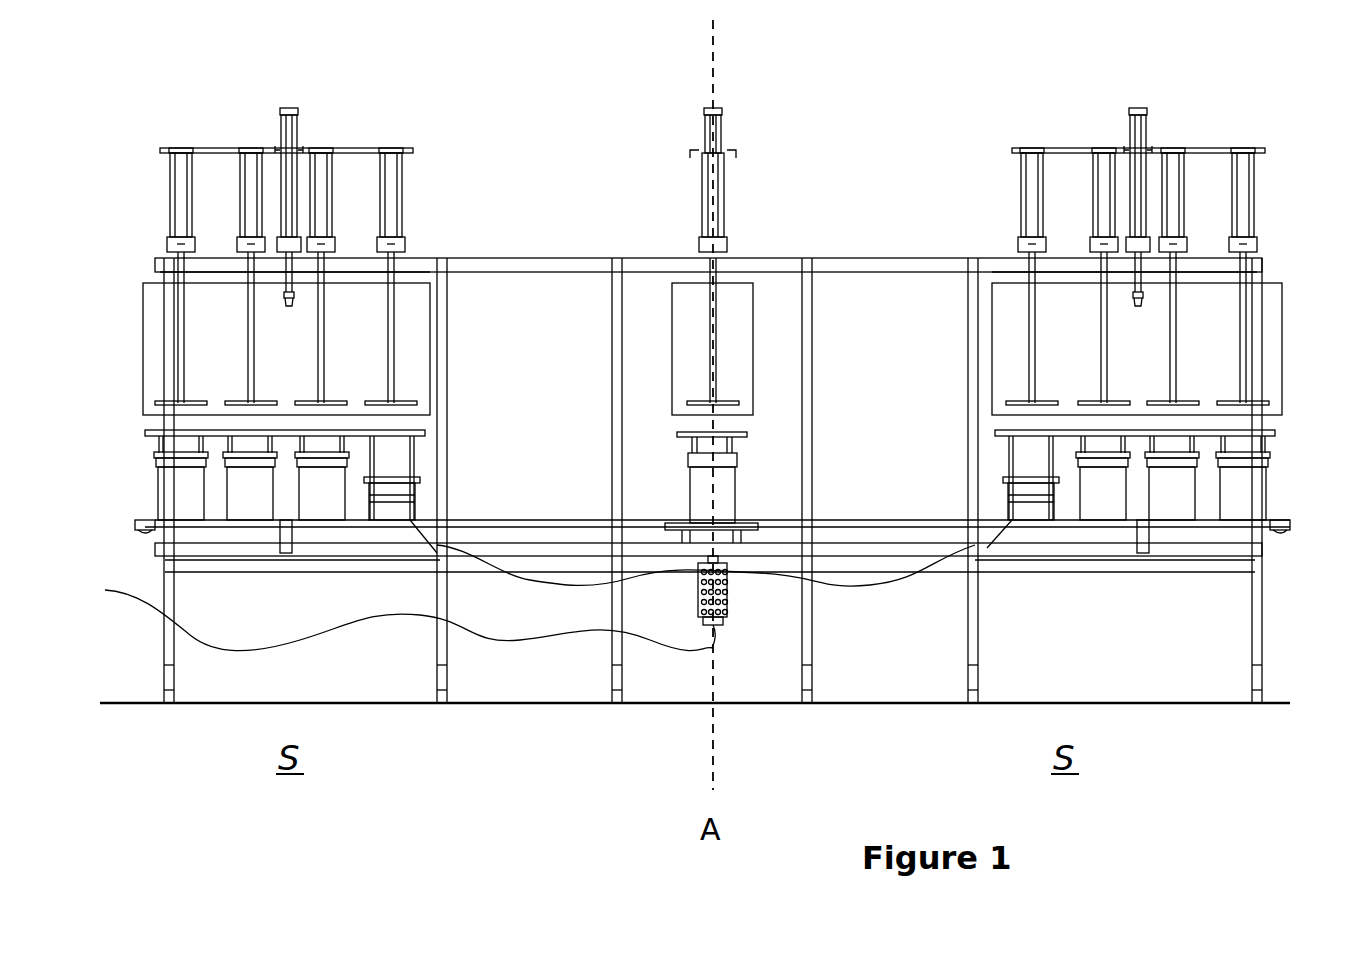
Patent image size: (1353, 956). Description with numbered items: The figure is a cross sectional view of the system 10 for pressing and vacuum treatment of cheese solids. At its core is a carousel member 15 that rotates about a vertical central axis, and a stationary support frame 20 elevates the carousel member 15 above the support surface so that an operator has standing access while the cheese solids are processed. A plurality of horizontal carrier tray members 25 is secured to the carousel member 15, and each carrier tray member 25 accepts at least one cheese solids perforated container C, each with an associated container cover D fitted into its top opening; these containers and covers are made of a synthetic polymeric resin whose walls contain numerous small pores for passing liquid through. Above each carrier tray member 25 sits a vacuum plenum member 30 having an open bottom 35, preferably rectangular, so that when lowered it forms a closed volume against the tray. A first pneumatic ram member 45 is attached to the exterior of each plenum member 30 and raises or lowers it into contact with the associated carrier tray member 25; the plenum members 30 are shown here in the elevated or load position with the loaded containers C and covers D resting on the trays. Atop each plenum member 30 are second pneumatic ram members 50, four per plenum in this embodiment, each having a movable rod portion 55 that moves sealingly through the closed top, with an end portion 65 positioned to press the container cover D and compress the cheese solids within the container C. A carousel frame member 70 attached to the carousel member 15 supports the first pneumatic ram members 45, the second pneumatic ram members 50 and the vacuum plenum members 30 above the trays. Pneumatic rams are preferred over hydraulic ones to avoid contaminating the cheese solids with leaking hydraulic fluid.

The system for pressing and vacuum treatment of cheese solids 10 is at (865, 160).
The carousel member 15 is at (175, 545).
The stationary support frame 20 is at (235, 562).
The carrier tray member 25 is at (445, 522).
The vacuum plenum member 30 is at (143, 315).
The open bottom 35 is at (446, 418).
The first pneumatic ram member 45 is at (291, 135).
The second pneumatic ram member 50 is at (187, 178).
The movable rod portion 55 is at (180, 338).
The end portion 65 is at (195, 400).
The carousel frame member 70 is at (540, 262).
The container cover D is at (178, 447).
The cheese solids perforated container C is at (185, 495).